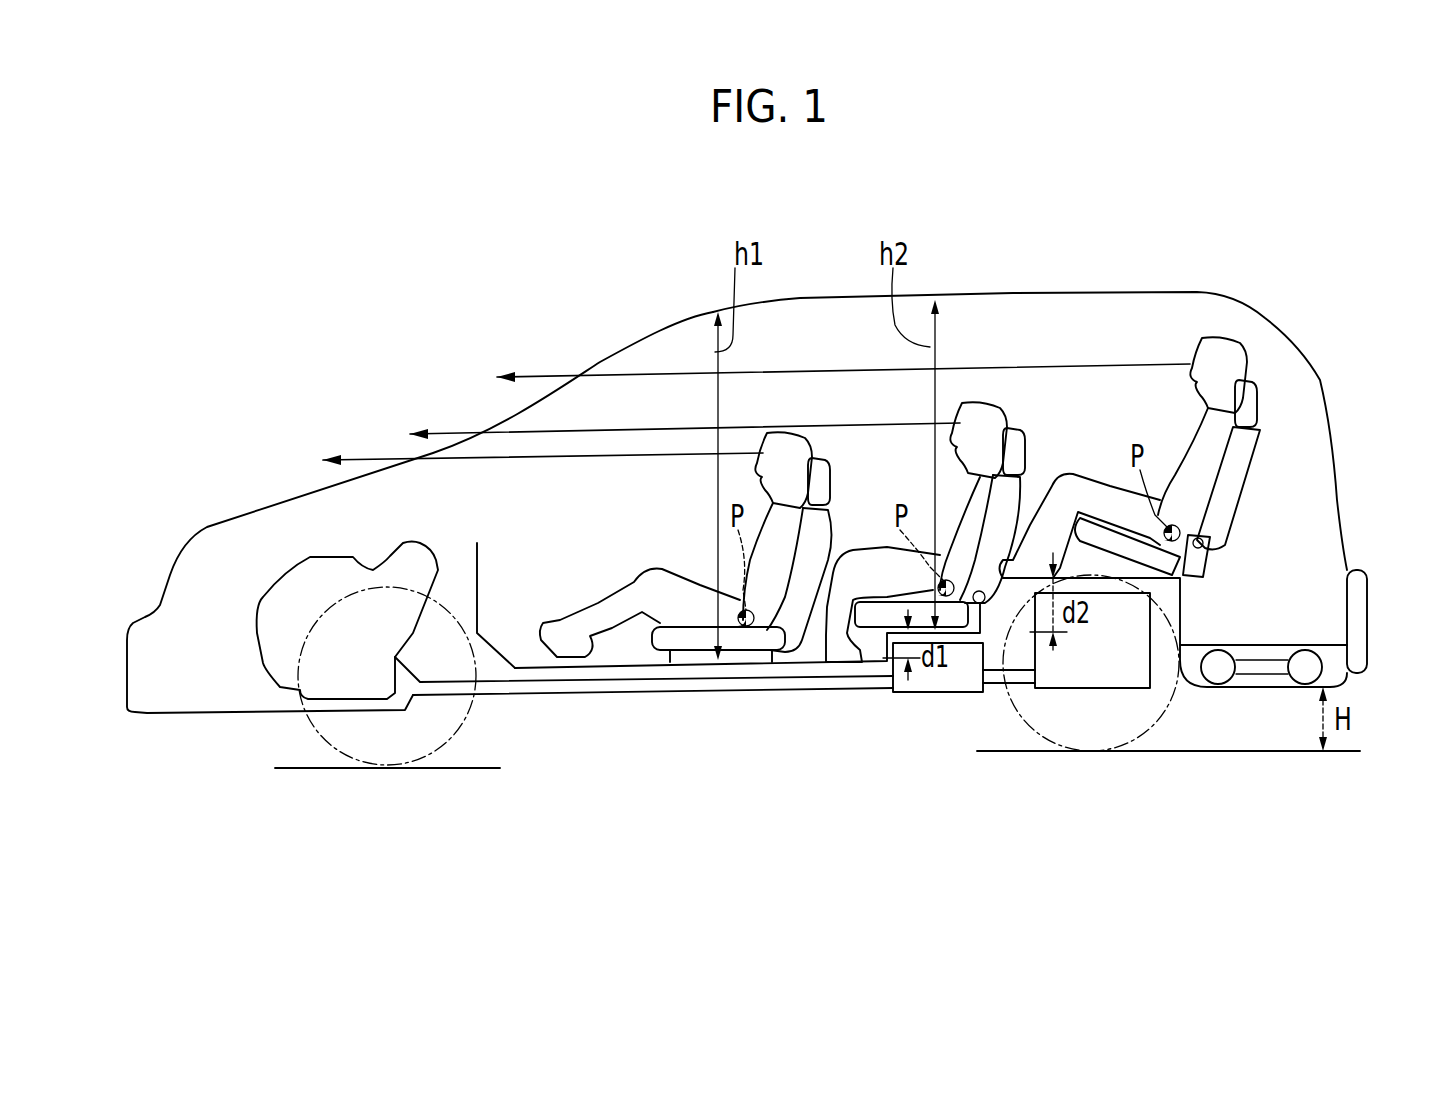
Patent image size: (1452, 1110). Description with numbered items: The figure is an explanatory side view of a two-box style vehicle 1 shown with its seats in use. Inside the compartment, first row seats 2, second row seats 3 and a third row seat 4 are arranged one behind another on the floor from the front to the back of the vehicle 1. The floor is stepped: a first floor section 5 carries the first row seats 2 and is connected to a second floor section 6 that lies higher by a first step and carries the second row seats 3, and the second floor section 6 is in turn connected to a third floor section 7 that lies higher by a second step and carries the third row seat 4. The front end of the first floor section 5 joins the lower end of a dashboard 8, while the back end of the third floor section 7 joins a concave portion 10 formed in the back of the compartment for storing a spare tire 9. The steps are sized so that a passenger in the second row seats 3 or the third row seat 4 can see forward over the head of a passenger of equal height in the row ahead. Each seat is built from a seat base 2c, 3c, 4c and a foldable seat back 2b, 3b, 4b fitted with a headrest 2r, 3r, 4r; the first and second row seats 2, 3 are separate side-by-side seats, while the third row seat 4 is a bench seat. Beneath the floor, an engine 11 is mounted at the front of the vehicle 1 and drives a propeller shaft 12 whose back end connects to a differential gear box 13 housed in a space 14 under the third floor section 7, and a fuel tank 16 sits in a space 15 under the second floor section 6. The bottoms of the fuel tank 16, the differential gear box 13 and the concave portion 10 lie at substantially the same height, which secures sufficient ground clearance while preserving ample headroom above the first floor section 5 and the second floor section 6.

The vehicle 1 is at (1135, 283).
The first row seats 2 is at (752, 532).
The headrest 2r is at (823, 473).
The seat back 2b is at (823, 527).
The seat base 2c is at (684, 647).
The second row seats 3 is at (927, 531).
The headrest 3r is at (1020, 437).
The seat back 3b is at (1020, 497).
The seat base 3c is at (852, 658).
The third row seat 4 is at (1221, 439).
The headrest 4r is at (1257, 403).
The seat back 4b is at (1227, 485).
The seat base 4c is at (1200, 570).
The first floor section 5 is at (523, 665).
The second floor section 6 is at (1075, 518).
The third floor section 7 is at (1140, 707).
The dashboard 8 is at (497, 640).
The spare tire 9 is at (1327, 663).
The concave portion 10 is at (1333, 610).
The engine 11 is at (330, 557).
The propeller shaft 12 is at (500, 693).
The differential gear box 13 is at (1080, 670).
The space 14 is at (1170, 598).
The space 15 is at (883, 668).
The fuel tank 16 is at (953, 680).